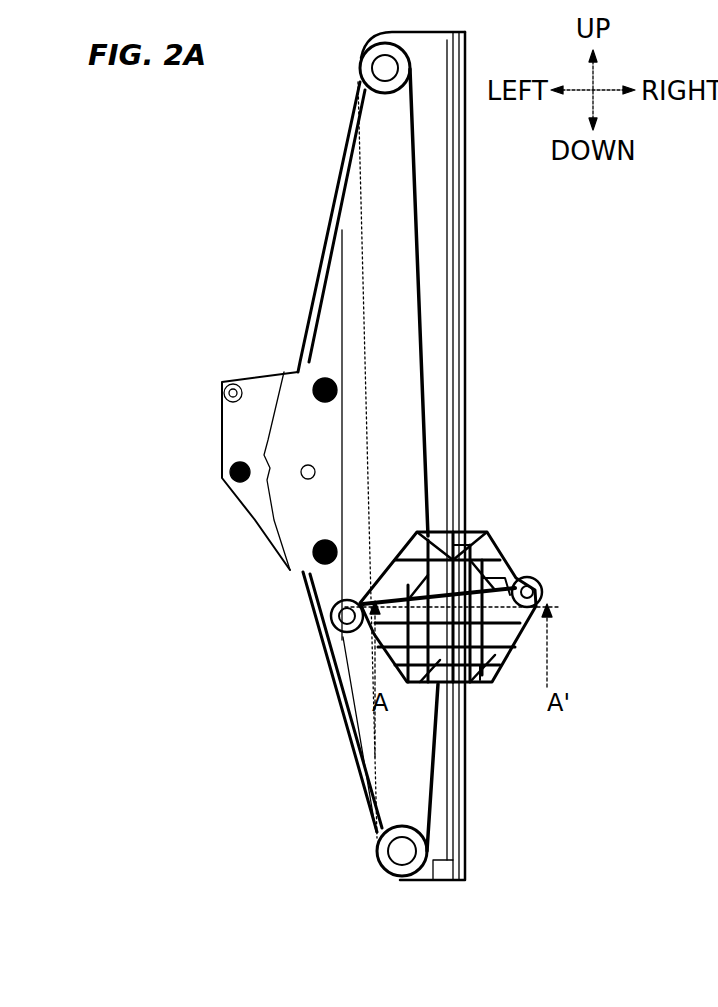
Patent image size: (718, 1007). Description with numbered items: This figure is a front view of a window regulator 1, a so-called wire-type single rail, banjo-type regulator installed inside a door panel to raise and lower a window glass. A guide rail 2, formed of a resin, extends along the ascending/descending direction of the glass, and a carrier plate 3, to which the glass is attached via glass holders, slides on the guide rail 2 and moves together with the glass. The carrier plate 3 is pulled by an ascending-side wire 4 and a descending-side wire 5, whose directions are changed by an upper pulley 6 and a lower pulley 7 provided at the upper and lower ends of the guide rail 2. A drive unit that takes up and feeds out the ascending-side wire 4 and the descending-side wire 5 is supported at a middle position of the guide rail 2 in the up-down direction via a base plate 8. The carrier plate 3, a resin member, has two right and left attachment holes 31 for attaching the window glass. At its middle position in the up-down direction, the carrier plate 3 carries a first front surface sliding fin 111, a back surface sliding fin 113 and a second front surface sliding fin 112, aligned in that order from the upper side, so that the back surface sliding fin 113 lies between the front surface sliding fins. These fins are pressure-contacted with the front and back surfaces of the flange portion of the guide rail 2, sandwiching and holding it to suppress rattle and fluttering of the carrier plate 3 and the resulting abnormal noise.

The window regulator 1 is at (510, 216).
The guide rail 2 is at (440, 268).
The carrier plate 3 is at (457, 606).
The ascending-side wire 4 is at (421, 322).
The descending-side wire 5 is at (437, 760).
The upper pulley 6 is at (358, 82).
The lower pulley 7 is at (382, 848).
The base plate 8 is at (236, 432).
The attachment hole 31 is at (541, 594).
The first front surface sliding fin 111 is at (486, 543).
The second front surface sliding fin 112 is at (485, 672).
The back surface sliding fin 113 is at (518, 578).